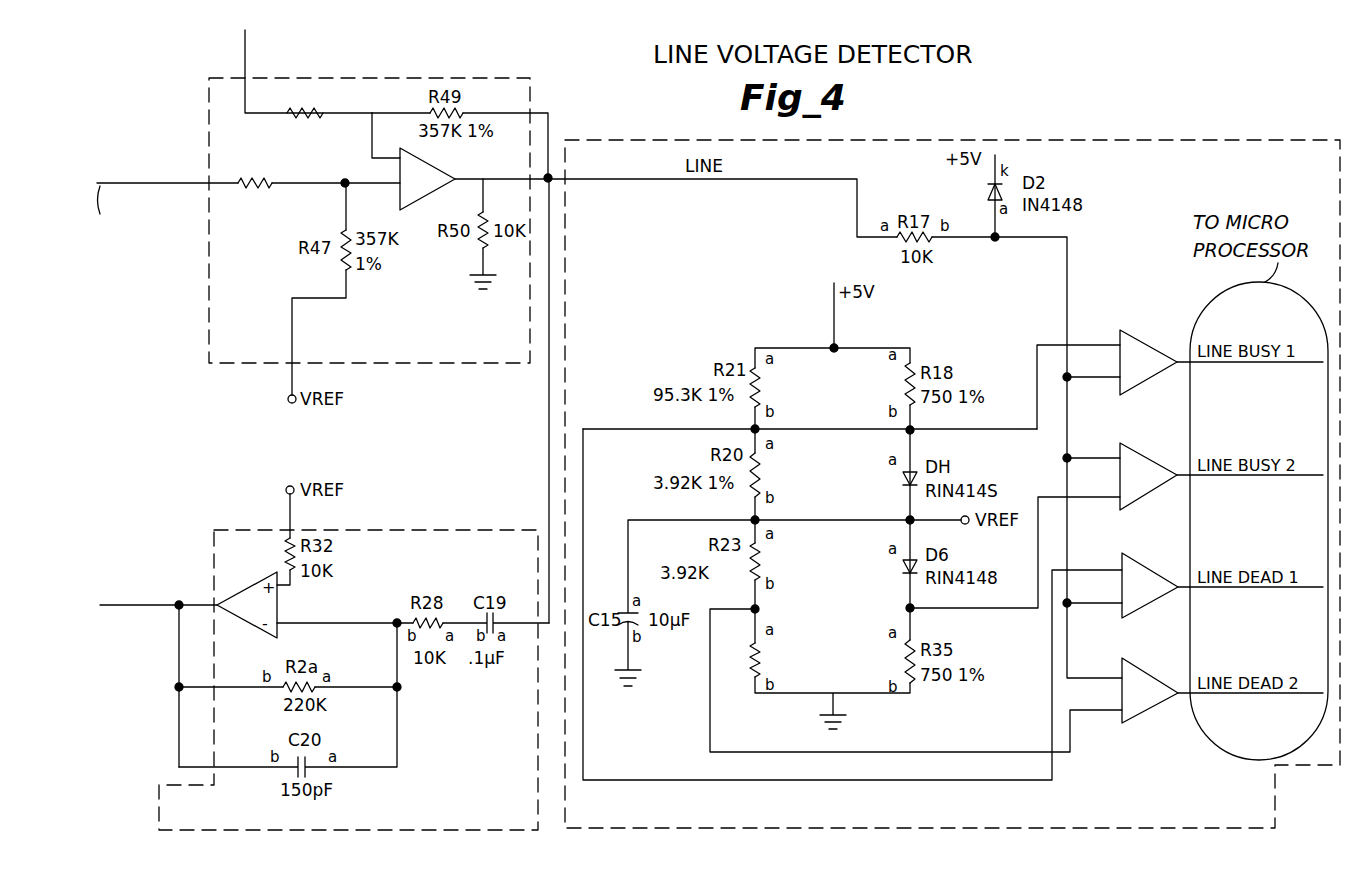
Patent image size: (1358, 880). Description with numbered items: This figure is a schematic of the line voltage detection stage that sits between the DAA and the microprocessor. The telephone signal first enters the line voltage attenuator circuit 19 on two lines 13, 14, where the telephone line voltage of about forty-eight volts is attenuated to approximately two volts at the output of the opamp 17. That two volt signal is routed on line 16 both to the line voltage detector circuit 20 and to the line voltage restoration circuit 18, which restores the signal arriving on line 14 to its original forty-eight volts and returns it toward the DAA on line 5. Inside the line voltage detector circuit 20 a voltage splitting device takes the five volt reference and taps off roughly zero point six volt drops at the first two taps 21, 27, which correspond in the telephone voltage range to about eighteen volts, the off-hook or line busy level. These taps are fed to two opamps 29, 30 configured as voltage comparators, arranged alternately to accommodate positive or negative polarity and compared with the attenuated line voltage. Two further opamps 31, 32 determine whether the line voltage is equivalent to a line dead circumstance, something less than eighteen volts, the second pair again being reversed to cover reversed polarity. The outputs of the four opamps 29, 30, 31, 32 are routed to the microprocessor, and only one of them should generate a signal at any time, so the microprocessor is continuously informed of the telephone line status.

The line to DAA (output of restoration circuit) 5 is at (100, 605).
The line 13 is at (248, 192).
The line 14 is at (272, 118).
The line 16 is at (548, 174).
The opamp 17 is at (437, 160).
The line voltage restoration circuit 18 is at (175, 790).
The line voltage attenuator circuit 19 is at (212, 278).
The line voltage detector circuit 20 is at (1197, 162).
The first reference voltage node of resistor ladder 21 is at (758, 432).
The programming extension circuit 27 is at (906, 430).
The opamp 29 is at (1143, 342).
The opamp 30 is at (1150, 576).
The opamp 31 is at (1143, 456).
The opamp 32 is at (1150, 681).